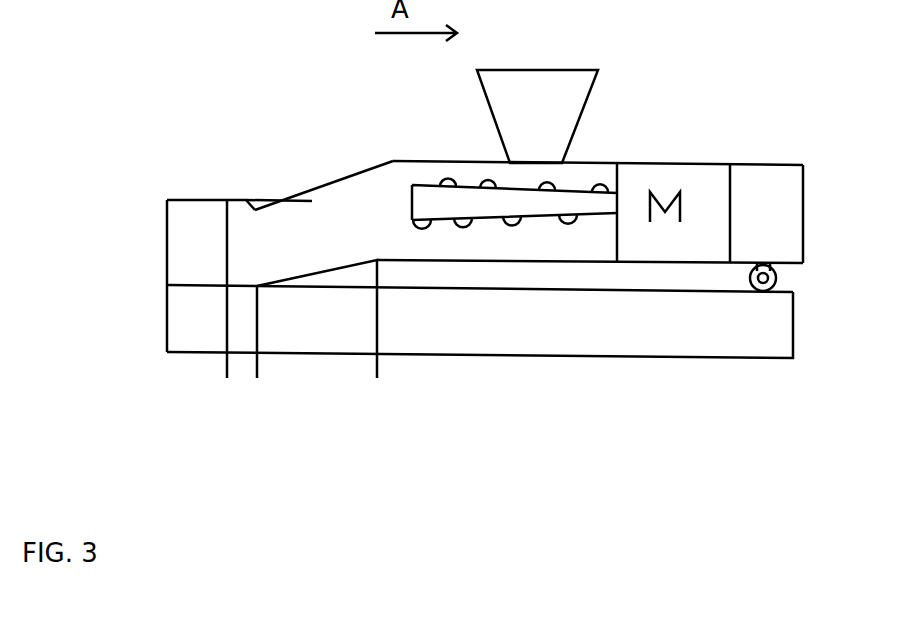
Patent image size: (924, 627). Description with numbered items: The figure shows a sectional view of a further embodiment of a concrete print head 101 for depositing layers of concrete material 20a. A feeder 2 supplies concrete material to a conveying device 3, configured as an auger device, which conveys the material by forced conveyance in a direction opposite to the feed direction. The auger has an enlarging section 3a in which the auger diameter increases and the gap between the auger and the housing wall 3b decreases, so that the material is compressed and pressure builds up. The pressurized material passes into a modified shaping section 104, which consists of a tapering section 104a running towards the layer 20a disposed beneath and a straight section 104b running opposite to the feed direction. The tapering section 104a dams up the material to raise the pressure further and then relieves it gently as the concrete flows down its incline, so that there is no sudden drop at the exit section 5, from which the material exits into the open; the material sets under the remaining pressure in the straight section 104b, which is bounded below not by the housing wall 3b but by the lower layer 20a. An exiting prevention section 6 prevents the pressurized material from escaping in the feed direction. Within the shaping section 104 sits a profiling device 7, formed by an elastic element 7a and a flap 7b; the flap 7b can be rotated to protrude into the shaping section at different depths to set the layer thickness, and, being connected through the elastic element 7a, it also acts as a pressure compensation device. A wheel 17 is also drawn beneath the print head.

The feeder 2 is at (487, 100).
The conveying device 3 is at (573, 189).
The enlarging section 3a is at (472, 187).
The housing wall 3b is at (408, 158).
The exit section 5 is at (225, 213).
The exiting prevention section 6 is at (621, 174).
The profiling device 7 is at (305, 156).
The elastic element 7a is at (255, 206).
The flap 7b is at (282, 203).
The wheel 17 is at (778, 277).
The layer of concrete material 20a is at (167, 248).
The print head 101 is at (606, 102).
The shaping section 104 is at (222, 428).
The tapering section 104a is at (377, 373).
The straight section 104b is at (257, 373).